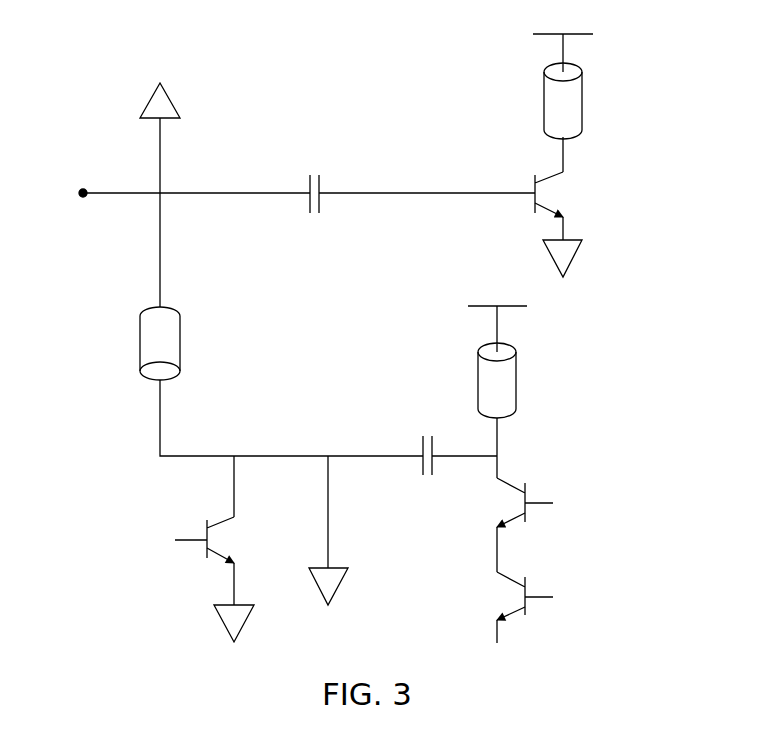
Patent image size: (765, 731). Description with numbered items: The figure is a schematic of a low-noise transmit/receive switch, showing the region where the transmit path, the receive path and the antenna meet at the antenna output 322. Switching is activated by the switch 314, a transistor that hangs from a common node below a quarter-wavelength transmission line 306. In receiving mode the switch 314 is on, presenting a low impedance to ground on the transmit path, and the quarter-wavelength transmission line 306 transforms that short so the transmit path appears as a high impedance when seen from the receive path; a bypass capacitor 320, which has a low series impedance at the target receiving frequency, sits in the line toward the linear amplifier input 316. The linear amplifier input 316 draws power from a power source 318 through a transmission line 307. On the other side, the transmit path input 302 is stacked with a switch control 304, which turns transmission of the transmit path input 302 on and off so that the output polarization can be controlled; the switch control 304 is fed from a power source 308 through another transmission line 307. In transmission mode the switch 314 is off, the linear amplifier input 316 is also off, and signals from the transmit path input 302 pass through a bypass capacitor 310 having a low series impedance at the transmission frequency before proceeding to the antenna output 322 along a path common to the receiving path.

The transmit path input 302 is at (558, 597).
The switch control 304 is at (558, 503).
The quarter-wavelength transmission line 306 is at (140, 345).
The transmission line 307 is at (582, 103).
The power source 308 is at (530, 306).
The bypass capacitor 310 is at (427, 432).
The switch 314 is at (173, 541).
The linear amplifier input 316 is at (563, 192).
The power source 318 is at (595, 35).
The bypass capacitor 320 is at (313, 170).
The antenna output 322 is at (83, 193).